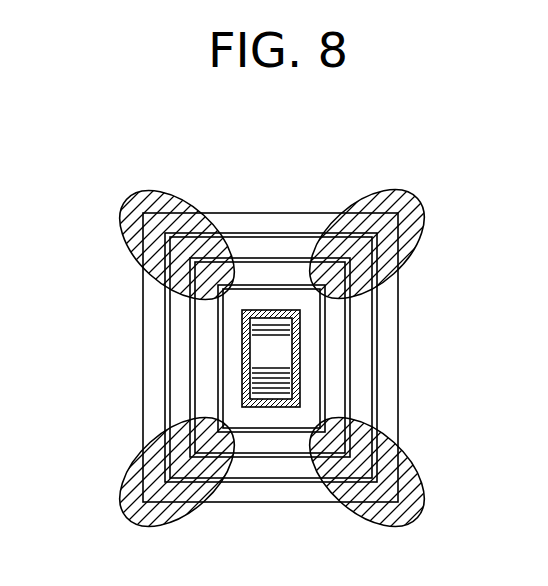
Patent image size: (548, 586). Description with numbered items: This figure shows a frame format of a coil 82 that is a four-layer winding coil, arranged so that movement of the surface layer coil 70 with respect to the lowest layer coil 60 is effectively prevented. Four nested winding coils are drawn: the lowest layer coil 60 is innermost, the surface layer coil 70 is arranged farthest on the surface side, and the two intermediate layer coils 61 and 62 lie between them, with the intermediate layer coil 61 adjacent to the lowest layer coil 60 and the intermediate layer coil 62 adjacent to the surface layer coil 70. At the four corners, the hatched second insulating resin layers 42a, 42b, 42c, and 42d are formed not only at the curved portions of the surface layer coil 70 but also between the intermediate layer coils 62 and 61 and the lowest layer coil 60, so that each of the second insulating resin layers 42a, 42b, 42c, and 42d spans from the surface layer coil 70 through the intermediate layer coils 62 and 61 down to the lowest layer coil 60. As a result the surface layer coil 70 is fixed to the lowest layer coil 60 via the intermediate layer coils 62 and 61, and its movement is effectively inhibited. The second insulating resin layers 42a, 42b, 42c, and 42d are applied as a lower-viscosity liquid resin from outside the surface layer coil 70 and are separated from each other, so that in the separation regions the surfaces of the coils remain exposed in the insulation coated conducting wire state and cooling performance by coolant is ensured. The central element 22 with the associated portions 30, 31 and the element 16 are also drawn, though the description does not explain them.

The coil 82 is at (248, 192).
The surface layer coil 70 is at (388, 297).
The intermediate layer coil 62 is at (362, 335).
The intermediate layer coil 61 is at (335, 368).
The lowest layer coil 60 is at (312, 400).
The second insulating resin layer 42a is at (128, 203).
The second insulating resin layer 42b is at (415, 196).
The second insulating resin layer 42c is at (415, 515).
The second insulating resin layer 42d is at (123, 510).
The substrate 16 is at (242, 362).
The semiconductor element 22 is at (271, 358).
The electrode 30 is at (283, 404).
The bonding layer 31 is at (283, 404).